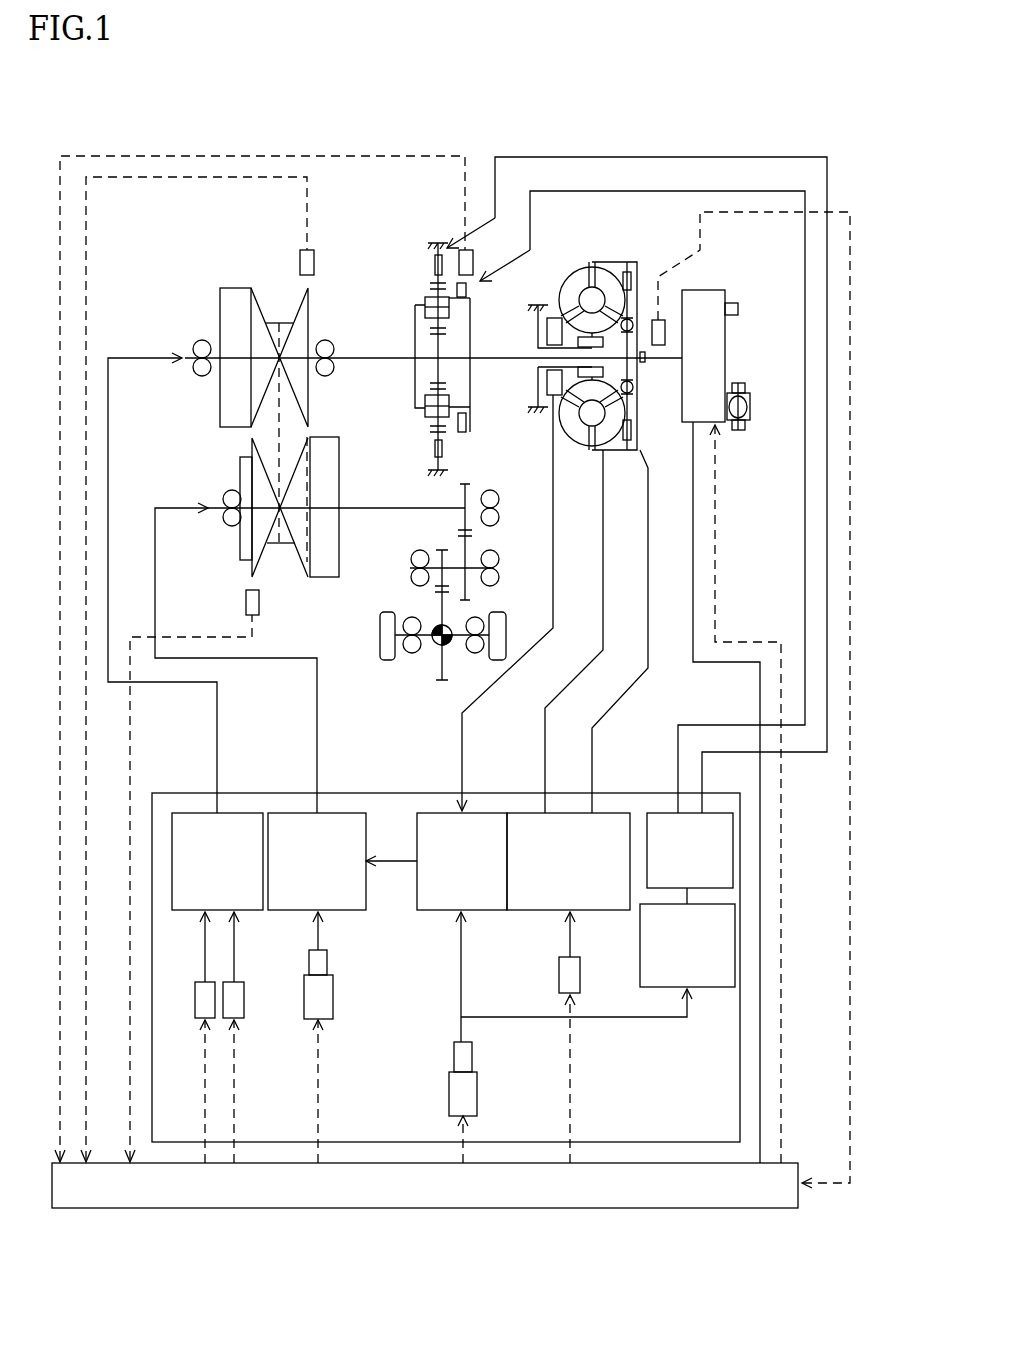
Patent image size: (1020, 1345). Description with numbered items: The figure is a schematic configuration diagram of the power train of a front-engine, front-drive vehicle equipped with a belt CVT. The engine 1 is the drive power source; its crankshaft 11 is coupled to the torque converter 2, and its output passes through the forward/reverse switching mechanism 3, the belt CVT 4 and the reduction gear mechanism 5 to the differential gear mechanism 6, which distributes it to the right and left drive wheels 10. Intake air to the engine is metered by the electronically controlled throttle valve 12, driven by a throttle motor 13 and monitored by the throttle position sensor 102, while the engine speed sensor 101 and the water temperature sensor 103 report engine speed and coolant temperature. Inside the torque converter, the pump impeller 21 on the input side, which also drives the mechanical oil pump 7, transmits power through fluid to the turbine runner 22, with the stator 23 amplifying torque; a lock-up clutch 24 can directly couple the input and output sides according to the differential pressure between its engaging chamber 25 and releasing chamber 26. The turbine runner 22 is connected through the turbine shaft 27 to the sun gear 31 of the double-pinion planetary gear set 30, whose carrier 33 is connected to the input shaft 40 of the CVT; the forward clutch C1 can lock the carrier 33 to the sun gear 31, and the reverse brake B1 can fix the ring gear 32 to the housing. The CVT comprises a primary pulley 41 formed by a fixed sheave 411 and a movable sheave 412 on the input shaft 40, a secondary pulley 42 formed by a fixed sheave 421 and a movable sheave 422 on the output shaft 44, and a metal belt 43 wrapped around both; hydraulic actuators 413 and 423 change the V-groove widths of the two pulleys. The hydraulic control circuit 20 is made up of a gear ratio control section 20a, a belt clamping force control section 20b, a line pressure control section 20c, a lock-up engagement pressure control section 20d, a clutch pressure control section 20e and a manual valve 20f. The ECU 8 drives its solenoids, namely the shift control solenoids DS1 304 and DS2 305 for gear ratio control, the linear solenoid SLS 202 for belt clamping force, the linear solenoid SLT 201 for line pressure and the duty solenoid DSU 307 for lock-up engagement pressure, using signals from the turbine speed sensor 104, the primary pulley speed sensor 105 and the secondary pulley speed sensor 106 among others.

The engine 1 is at (716, 280).
The torque converter 2 is at (593, 253).
The forward/reverse switching mechanism 3 is at (440, 222).
The belt CVT 4 is at (262, 258).
The reduction gear mechanism 5 is at (478, 548).
The differential gear mechanism 6 is at (437, 645).
The mechanical oil pump 7 is at (547, 378).
The ECU 8 is at (515, 1210).
The drive wheels 10 is at (380, 640).
The crankshaft 11 is at (658, 360).
The throttle valve 12 is at (750, 407).
The throttle motor 13 is at (739, 393).
The hydraulic control circuit 20 is at (400, 793).
The gear ratio control section 20a is at (232, 812).
The belt clamping force control section 20b is at (331, 812).
The line pressure control section 20c is at (478, 812).
The lock-up engagement pressure control section 20d is at (595, 912).
The clutch pressure control section 20e is at (712, 989).
The manual valve 20f is at (663, 812).
The pump impeller 21 is at (578, 432).
The turbine runner 22 is at (618, 452).
The stator 23 is at (565, 428).
The lock-up clutch 24 is at (644, 436).
The engaging chamber 25 is at (610, 452).
The releasing chamber 26 is at (634, 410).
The turbine shaft 27 is at (484, 355).
The planetary gear set 30 is at (398, 375).
The sun gear 31 is at (433, 330).
The ring gear 32 is at (430, 285).
The carrier 33 is at (430, 296).
The input shaft 40 is at (377, 362).
The primary pulley 41 is at (207, 301).
The secondary pulley 42 is at (236, 562).
The belt 43 is at (287, 323).
The output shaft 44 is at (387, 510).
The engine speed sensor 101 is at (652, 322).
The throttle position sensor 102 is at (738, 431).
The water temperature sensor 103 is at (739, 308).
The turbine speed sensor 104 is at (474, 262).
The primary pulley speed sensor 105 is at (314, 262).
The secondary pulley speed sensor 106 is at (259, 605).
The linear solenoid (SLT) 201 is at (449, 1088).
The linear solenoid (SLS) 202 is at (333, 998).
The shift control solenoid (DS1) 304 is at (195, 1000).
The shift control solenoid (DS2) 305 is at (244, 1000).
The duty solenoid (DSU) 307 is at (559, 975).
The fixed sheave 411 is at (300, 328).
The movable sheave 412 is at (260, 390).
The hydraulic actuator 413 is at (233, 323).
The fixed sheave 421 is at (247, 540).
The movable sheave 422 is at (304, 552).
The hydraulic actuator 423 is at (338, 558).
The reverse brake B1 is at (433, 263).
The forward clutch C1 is at (467, 292).
The shift control solenoid DS1 is at (178, 967).
The shift control solenoid DS2 is at (260, 967).
The duty solenoid DSU is at (539, 947).
The linear solenoid SLS is at (352, 967).
The linear solenoid SLT is at (497, 1055).